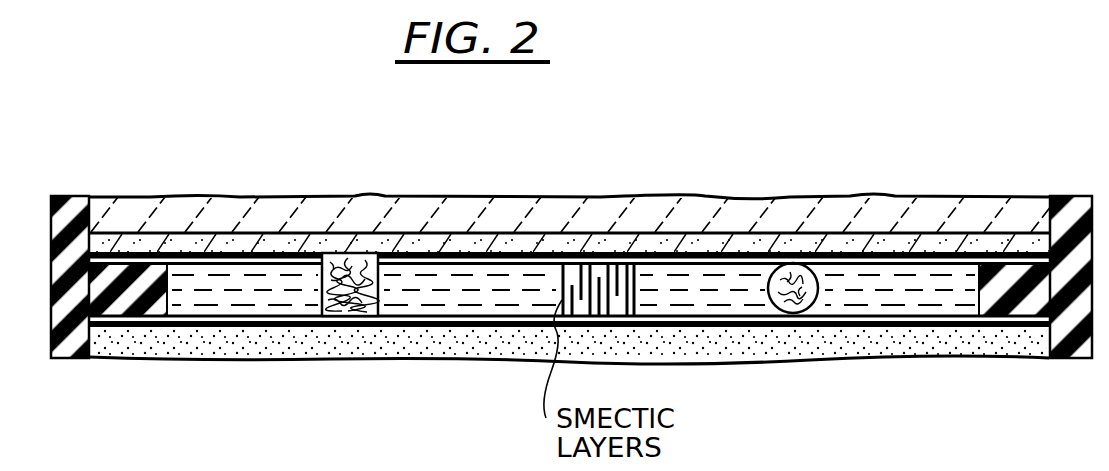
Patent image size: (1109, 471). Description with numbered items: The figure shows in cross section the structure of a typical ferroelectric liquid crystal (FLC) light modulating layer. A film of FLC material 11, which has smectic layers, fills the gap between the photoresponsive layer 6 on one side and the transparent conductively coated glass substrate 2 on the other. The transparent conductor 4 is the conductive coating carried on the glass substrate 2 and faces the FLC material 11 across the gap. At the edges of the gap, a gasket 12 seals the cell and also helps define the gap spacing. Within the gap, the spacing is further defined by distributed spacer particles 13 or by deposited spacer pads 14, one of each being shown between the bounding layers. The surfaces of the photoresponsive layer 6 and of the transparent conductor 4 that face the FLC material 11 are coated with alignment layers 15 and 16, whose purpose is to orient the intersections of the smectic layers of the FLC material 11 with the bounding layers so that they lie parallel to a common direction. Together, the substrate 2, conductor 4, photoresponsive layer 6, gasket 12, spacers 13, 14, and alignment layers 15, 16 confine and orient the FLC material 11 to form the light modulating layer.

The transparent conductively coated glass substrate 2 is at (197, 208).
The transparent conductor 4 is at (392, 243).
The photoresponsive layer 6 is at (970, 347).
The FLC material 11 is at (238, 304).
The gasket 12 is at (64, 203).
The spacer particles 13 is at (824, 290).
The spacer pads 14 is at (352, 306).
The alignment layer 15 is at (322, 318).
The alignment layer 16 is at (718, 258).